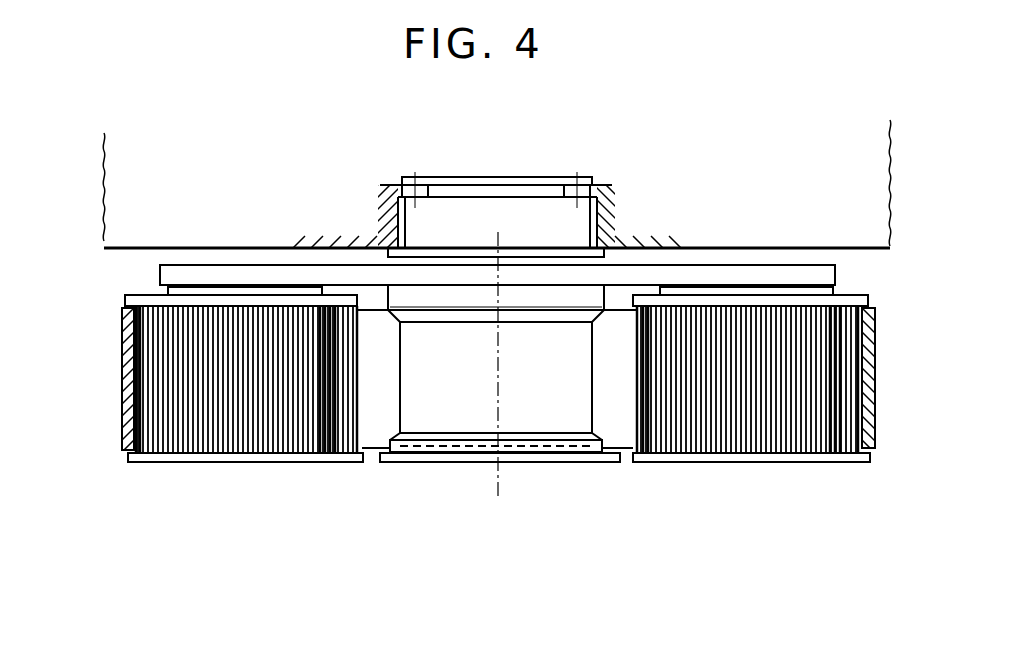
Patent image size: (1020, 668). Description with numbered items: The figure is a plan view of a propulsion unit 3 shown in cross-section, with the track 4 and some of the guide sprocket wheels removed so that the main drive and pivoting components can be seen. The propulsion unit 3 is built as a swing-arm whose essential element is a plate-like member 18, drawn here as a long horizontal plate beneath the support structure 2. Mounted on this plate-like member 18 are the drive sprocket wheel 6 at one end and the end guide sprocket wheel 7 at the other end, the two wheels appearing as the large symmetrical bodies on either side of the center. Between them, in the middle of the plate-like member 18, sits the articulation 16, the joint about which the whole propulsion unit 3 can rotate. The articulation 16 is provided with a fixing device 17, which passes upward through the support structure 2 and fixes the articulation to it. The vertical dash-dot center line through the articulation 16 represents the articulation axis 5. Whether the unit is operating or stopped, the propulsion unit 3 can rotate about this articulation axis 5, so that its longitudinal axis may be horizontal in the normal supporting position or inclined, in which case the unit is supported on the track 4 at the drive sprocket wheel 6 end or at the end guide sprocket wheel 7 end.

The support structure 2 is at (245, 250).
The propulsion unit 3 is at (388, 492).
The track 4 is at (123, 379).
The articulation axis 5 is at (499, 487).
The drive sprocket wheel 6 is at (242, 470).
The end guide sprocket wheel 7 is at (767, 460).
The articulation 16 is at (467, 468).
The fixing device 17 is at (482, 216).
The plate-like member 18 is at (738, 270).